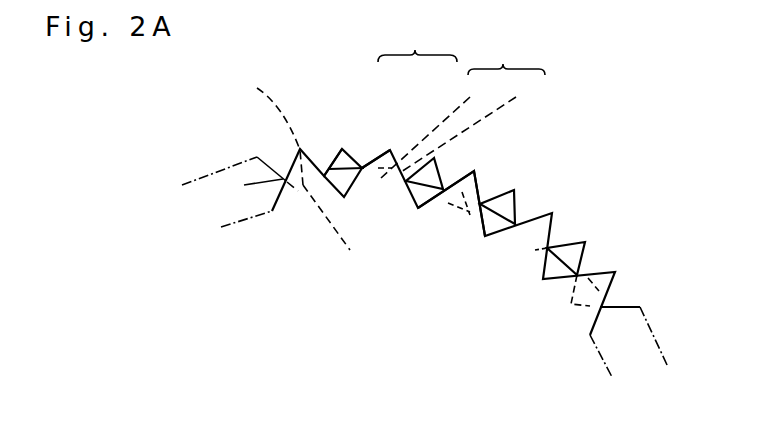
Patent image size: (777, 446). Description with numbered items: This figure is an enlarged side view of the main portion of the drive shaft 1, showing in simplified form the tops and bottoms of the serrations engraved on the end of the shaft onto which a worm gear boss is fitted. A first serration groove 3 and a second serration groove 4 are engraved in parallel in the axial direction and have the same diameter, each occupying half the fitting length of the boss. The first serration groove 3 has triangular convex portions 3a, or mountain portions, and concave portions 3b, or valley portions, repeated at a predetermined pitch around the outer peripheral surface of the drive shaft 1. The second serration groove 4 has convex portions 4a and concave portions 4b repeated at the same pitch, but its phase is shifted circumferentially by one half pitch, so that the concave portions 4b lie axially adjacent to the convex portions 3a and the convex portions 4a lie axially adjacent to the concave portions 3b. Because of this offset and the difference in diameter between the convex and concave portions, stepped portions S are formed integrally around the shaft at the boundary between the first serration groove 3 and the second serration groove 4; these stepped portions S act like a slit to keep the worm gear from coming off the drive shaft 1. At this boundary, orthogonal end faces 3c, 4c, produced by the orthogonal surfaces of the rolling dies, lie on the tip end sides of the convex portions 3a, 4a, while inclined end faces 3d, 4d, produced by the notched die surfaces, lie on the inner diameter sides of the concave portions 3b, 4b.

The drive shaft 1 is at (298, 318).
The first serration groove 3 is at (592, 230).
The convex portions 3a is at (362, 168).
The concave portions 3b is at (333, 230).
The orthogonal end face 3c is at (342, 150).
The inclined end face 3d is at (380, 128).
The second serration groove 4 is at (628, 267).
The convex portions 4a is at (474, 171).
The concave portions 4b is at (347, 189).
The orthogonal end face 4c is at (488, 190).
The inclined end face 4d is at (364, 168).
The stepped portions S is at (461, 46).